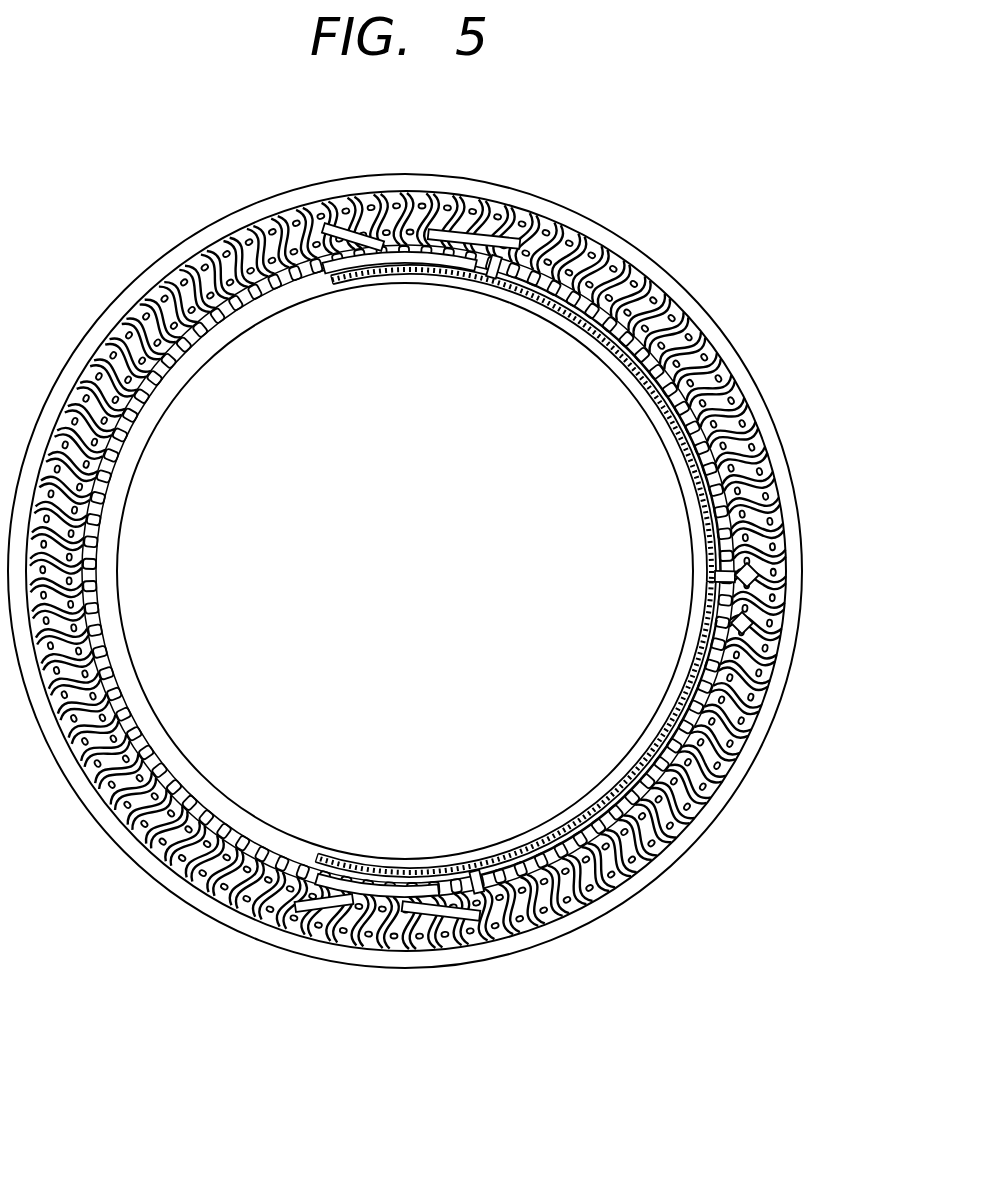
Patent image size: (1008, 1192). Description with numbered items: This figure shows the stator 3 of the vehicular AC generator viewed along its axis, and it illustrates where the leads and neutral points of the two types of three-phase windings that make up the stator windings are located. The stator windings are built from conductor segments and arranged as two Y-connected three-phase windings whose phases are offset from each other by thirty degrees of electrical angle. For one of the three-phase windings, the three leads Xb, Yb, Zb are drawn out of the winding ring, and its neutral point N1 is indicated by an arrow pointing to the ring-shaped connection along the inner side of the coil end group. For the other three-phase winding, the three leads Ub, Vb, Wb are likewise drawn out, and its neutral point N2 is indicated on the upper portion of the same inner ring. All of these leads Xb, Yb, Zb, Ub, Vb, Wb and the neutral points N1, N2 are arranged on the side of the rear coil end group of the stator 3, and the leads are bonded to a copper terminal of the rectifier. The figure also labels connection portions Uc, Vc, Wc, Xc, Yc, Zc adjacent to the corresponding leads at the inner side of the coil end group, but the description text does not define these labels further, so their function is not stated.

The stator 3 is at (704, 183).
The neutral point N1 is at (459, 833).
The neutral point N2 is at (456, 308).
The lead Ub is at (759, 576).
The lead Vb is at (358, 233).
The lead Wb is at (483, 234).
The lead Xb is at (753, 621).
The lead Yb is at (443, 918).
The lead Zb is at (316, 910).
The U-phase connecting conductor Uc is at (655, 398).
The V-phase connecting conductor Vc is at (387, 266).
The W-phase connecting conductor Wc is at (490, 278).
The X-phase connecting conductor Xc is at (660, 740).
The Y-phase connecting conductor Yc is at (478, 872).
The Z-phase connecting conductor Zc is at (380, 882).